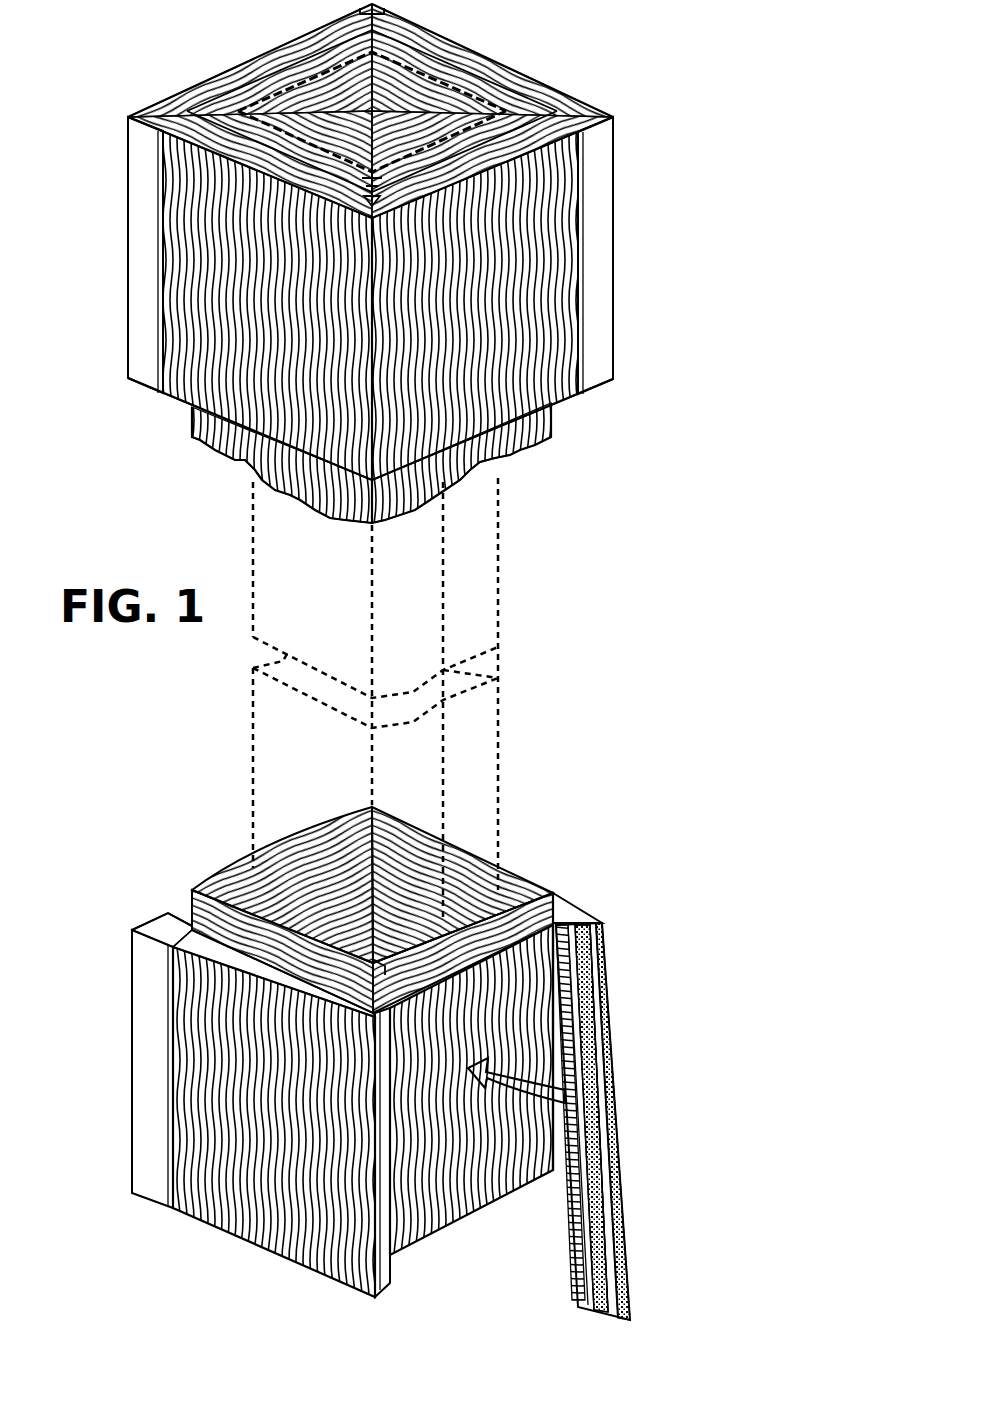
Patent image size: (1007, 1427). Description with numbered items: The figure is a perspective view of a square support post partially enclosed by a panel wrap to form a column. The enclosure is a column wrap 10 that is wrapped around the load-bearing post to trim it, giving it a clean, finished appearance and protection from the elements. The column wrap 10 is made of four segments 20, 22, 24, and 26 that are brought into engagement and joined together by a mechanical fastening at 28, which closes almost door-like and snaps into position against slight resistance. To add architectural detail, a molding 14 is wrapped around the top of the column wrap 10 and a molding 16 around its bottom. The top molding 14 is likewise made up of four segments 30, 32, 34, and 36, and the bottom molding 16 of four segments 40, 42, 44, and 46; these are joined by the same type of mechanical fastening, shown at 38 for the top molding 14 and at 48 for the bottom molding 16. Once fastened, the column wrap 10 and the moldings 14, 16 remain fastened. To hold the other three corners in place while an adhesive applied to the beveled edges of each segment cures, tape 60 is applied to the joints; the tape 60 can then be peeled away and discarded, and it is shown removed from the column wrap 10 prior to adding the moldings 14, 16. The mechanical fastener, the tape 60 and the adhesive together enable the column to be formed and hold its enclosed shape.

The column wrap 10 is at (553, 422).
The molding 14 is at (522, 233).
The molding 16 is at (200, 1090).
The segment 20 is at (225, 110).
The segment 22 is at (300, 54).
The segment 24 is at (465, 72).
The segment 26 is at (443, 152).
The mechanical fastening 28 is at (402, 222).
The segment 30 is at (165, 150).
The segment 32 is at (238, 72).
The segment 34 is at (510, 72).
The segment 36 is at (598, 138).
The mechanical fastening 38 is at (358, 218).
The segment 40 is at (150, 957).
The segment 42 is at (190, 912).
The segment 44 is at (577, 915).
The segment 46 is at (610, 1012).
The mechanical fastening 48 is at (625, 1100).
The tape 60 is at (146, 315).